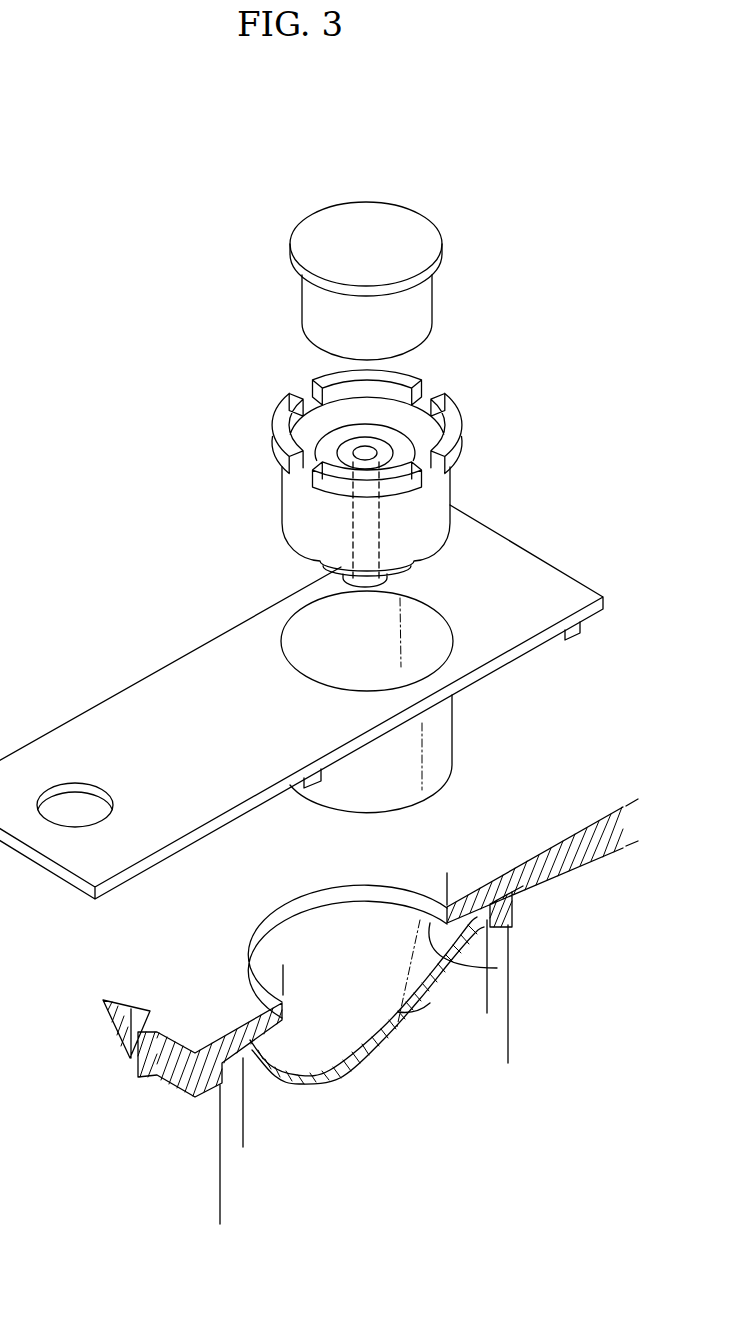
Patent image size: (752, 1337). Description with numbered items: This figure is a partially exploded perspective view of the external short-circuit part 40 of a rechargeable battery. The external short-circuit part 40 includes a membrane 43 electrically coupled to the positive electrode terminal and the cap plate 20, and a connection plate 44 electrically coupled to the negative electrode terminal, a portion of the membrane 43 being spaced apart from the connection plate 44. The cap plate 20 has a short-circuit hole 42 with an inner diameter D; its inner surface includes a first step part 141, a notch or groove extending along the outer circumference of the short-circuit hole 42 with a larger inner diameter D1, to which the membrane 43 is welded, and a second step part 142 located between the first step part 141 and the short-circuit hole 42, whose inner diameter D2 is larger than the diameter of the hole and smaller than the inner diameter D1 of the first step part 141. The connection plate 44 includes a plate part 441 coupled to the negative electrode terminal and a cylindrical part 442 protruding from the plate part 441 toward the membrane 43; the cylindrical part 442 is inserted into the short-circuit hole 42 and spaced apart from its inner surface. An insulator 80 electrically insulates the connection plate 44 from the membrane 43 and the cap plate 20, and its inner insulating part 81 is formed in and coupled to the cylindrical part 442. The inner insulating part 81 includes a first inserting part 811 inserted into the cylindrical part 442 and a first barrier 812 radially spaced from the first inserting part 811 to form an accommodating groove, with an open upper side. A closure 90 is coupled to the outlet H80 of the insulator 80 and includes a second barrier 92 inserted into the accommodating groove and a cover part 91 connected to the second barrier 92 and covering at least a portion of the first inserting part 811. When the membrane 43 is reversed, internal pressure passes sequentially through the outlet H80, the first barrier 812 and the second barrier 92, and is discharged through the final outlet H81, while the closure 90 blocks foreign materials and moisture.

The external short-circuit part 40 is at (166, 199).
The closure 90 is at (420, 206).
The cover part 91 is at (424, 247).
The second barrier 92 is at (423, 302).
The insulator 80 is at (395, 461).
The inner insulating part 81 is at (462, 406).
The final outlet H81 is at (437, 385).
The first barrier 812 is at (410, 450).
The first inserting part 811 is at (440, 493).
The outlet H80 is at (353, 524).
The connection plate 44 is at (616, 712).
The plate part 441 is at (487, 633).
The cylindrical part 442 is at (450, 748).
The cap plate 20 is at (103, 1042).
The second step part 142 is at (523, 887).
The first step part 141 is at (512, 900).
The short-circuit hole 42 is at (490, 968).
The membrane 43 is at (418, 1035).
The inner diameter of the short-circuit hole D is at (447, 887).
The inner diameter of the second step part D2 is at (487, 1008).
The inner diameter of the first step part D1 is at (507, 1055).